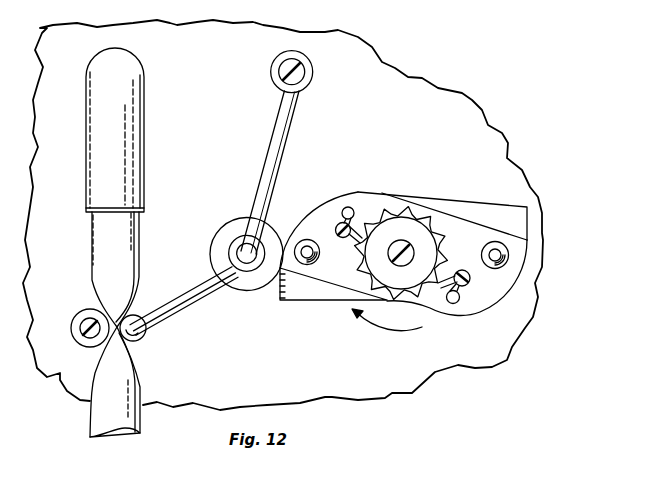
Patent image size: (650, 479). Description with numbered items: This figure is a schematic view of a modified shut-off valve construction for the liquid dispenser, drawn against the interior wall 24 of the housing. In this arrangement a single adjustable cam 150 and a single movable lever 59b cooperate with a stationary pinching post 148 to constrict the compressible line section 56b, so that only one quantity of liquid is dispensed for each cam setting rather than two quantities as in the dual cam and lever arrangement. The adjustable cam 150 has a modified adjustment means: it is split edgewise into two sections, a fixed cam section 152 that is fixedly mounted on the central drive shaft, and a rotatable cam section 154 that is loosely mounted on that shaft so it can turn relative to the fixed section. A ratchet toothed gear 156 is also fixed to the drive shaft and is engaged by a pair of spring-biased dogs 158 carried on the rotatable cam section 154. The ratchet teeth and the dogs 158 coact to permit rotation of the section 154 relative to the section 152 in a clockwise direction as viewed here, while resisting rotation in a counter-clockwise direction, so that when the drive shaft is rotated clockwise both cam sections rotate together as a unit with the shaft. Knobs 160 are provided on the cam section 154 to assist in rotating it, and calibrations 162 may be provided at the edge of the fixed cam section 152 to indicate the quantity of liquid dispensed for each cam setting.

The interior wall 24 is at (195, 163).
The compressible line section 56b is at (143, 243).
The movable lever 59b is at (284, 137).
The stationary pinching post 148 is at (71, 322).
The adjustable cam 150 is at (405, 182).
The fixed cam section 152 is at (314, 301).
The rotatable cam section 154 is at (331, 199).
The ratchet toothed gear 156 is at (421, 218).
The spring-biased dogs 158 is at (354, 233).
The knobs 160 is at (298, 244).
The calibrations 162 is at (274, 285).